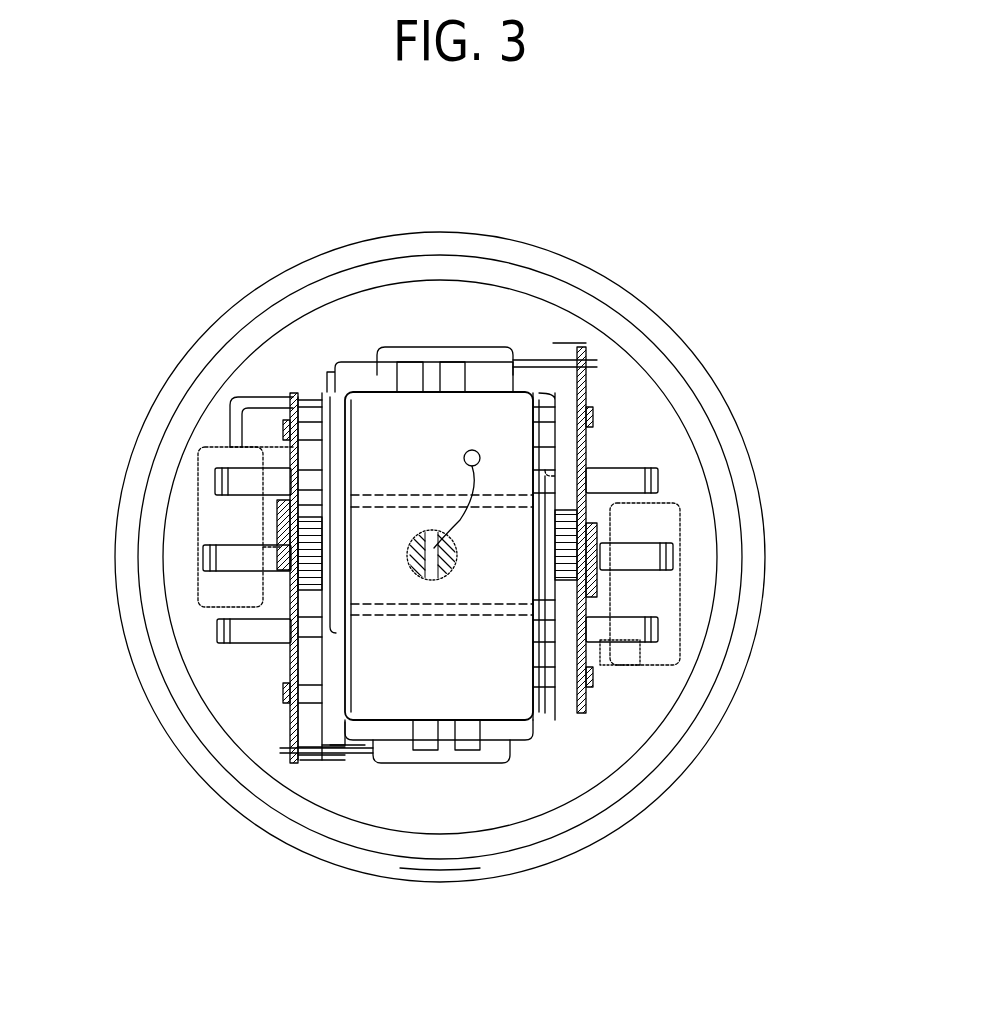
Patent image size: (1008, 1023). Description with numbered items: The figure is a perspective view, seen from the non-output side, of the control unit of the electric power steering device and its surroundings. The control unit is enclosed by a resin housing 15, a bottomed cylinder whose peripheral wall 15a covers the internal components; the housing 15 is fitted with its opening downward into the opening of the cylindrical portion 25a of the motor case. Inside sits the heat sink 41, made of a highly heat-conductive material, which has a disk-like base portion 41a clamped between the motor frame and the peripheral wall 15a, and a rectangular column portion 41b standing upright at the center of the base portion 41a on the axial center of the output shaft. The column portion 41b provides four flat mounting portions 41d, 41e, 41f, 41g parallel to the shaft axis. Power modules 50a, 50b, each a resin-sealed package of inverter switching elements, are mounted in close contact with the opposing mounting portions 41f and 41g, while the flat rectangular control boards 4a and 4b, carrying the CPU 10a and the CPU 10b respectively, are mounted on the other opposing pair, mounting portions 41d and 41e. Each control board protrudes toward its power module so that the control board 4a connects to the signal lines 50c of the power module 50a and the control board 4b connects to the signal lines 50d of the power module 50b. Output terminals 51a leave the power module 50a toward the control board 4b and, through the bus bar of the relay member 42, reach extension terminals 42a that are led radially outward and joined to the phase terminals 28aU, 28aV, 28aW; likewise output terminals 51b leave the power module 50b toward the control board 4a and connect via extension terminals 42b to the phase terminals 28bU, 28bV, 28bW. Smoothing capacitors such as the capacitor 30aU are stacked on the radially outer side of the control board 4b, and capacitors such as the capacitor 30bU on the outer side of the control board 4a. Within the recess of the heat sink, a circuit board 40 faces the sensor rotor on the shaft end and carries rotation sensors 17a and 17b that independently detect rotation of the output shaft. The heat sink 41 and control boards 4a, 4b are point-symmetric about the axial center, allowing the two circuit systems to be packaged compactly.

The control board 4a is at (290, 740).
The control board 4b is at (600, 398).
The CPU 10a is at (287, 537).
The CPU 10b is at (683, 537).
The housing 15 is at (630, 790).
The peripheral wall 15a is at (488, 847).
The rotation sensor 17a is at (430, 545).
The rotation sensor 17b is at (432, 553).
The cylindrical portion 25a is at (455, 873).
The phase terminal 28aU is at (663, 633).
The phase terminal 28aV is at (673, 553).
The phase terminal 28aW is at (660, 480).
The phase terminal 28bU is at (217, 470).
The phase terminal 28bV is at (195, 567).
The phase terminal 28bW is at (218, 640).
The smoothing capacitor 30aU is at (673, 605).
The smoothing capacitor 30bU is at (248, 458).
The circuit board 40 is at (390, 605).
The heat sink 41 is at (762, 228).
The base portion 41a is at (553, 343).
The column portion 41b is at (597, 380).
The mounting portion 41d is at (325, 720).
The mounting portion 41e is at (590, 442).
The mounting portion 41f is at (353, 733).
The mounting portion 41g is at (477, 347).
The relay member 42 is at (558, 702).
The extension terminal 42a is at (622, 645).
The extension terminal 42b is at (233, 543).
The power module 50a is at (462, 765).
The power module 50b is at (448, 347).
The signal lines 50c is at (332, 755).
The signal lines 50d is at (523, 340).
The output terminals 51a is at (533, 750).
The output terminals 51b is at (343, 377).